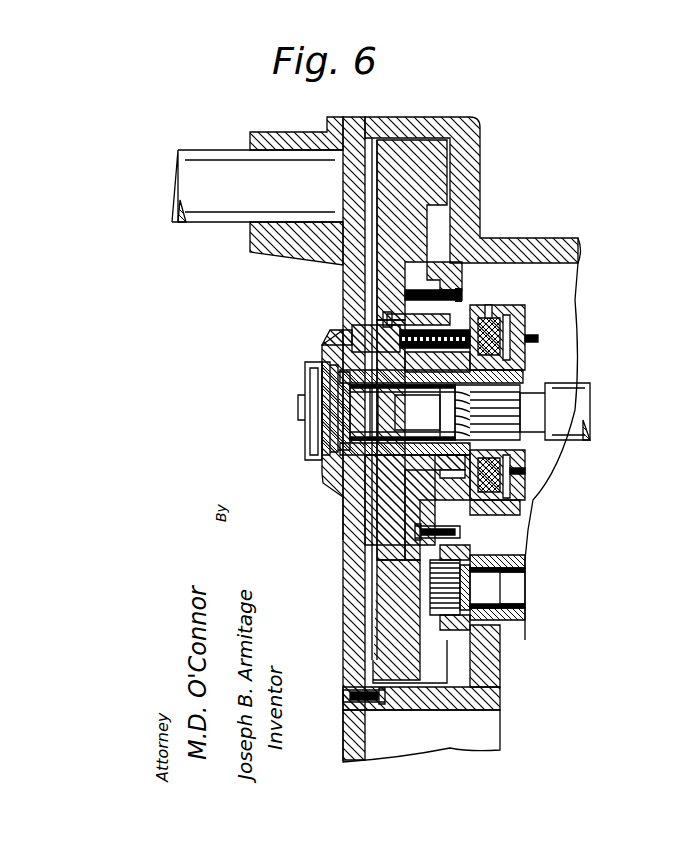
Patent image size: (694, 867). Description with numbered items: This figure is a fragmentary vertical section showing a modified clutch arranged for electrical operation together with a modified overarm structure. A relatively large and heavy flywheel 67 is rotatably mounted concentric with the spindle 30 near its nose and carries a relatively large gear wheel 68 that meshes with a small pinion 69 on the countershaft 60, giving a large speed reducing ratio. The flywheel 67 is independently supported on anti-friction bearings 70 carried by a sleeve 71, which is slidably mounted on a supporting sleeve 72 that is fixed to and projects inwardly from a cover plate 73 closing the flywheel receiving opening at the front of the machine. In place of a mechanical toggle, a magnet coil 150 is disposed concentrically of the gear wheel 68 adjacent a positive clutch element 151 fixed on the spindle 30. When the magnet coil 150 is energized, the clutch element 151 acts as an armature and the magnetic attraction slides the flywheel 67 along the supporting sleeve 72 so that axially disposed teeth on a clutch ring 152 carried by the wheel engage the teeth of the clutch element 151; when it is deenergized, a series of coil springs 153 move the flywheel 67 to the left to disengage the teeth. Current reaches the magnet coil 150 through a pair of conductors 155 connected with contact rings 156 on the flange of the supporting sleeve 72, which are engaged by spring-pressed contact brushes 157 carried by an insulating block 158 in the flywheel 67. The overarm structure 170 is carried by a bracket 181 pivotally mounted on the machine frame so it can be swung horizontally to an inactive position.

The spindle 30 is at (312, 379).
The countershaft 60 is at (518, 585).
The flywheel 67 is at (440, 178).
The gear wheel 68 is at (463, 273).
The pinion 69 is at (437, 593).
The anti-friction bearings 70 is at (412, 389).
The sleeve 71 is at (428, 432).
The supporting sleeve 72 is at (397, 437).
The cover plate 73 is at (343, 532).
The magnet coil 150 is at (490, 318).
The clutch element 151 is at (522, 484).
The clutch ring 152 is at (490, 516).
The coil springs 153 is at (522, 462).
The conductors 155 is at (352, 326).
The contact rings 156 is at (398, 481).
The contact brushes 157 is at (422, 295).
The insulating block 158 is at (416, 317).
The overarm structure 170 is at (198, 162).
The bracket 181 is at (277, 255).